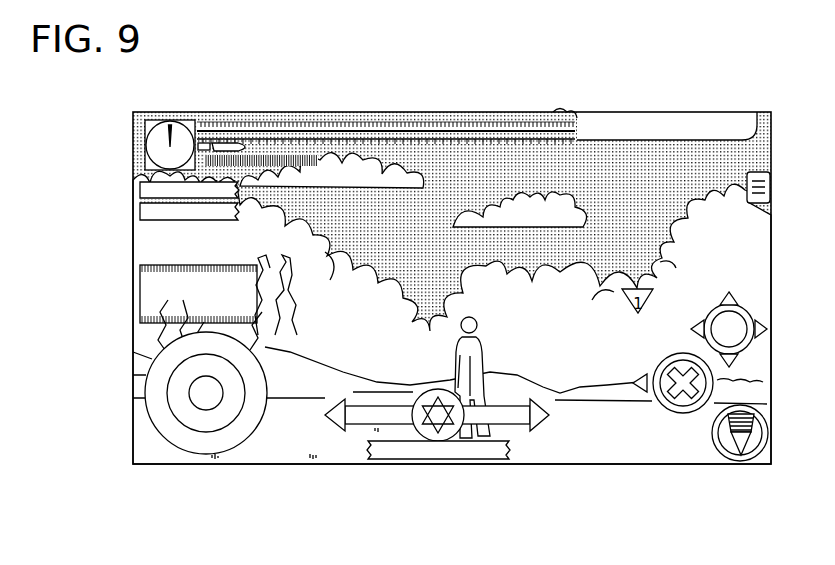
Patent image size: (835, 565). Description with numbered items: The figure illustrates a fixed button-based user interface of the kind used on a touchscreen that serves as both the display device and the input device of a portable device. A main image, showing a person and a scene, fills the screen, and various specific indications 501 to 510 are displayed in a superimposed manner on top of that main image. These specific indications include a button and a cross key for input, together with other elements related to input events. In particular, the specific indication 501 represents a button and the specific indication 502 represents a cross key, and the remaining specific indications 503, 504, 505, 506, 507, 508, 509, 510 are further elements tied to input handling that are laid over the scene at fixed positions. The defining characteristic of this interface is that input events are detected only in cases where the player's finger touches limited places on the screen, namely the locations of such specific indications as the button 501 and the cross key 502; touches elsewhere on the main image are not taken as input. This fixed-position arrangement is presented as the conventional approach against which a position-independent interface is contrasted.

The specific indication representing a button 501 is at (753, 440).
The specific indication representing a cross key 502 is at (730, 323).
The specific indication 503 is at (680, 414).
The specific indication 504 is at (427, 432).
The specific indication 505 is at (202, 417).
The specific indication 506 is at (147, 288).
The specific indication 507 is at (140, 210).
The specific indication 508 is at (140, 187).
The specific indication 509 is at (180, 120).
The specific indication 510 is at (368, 130).